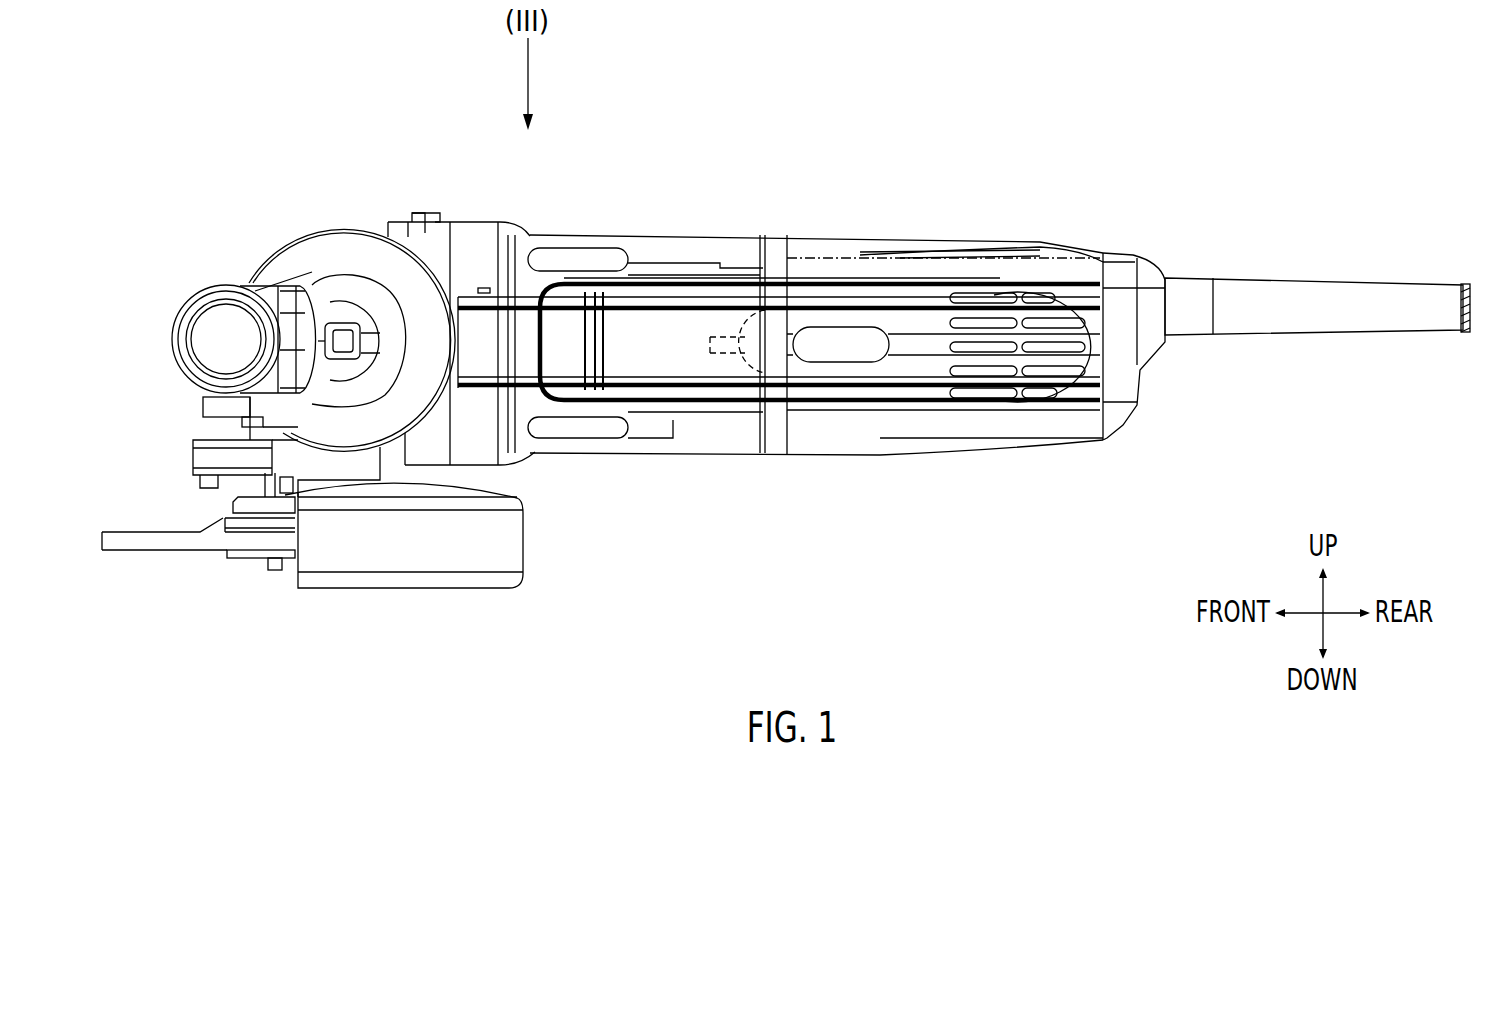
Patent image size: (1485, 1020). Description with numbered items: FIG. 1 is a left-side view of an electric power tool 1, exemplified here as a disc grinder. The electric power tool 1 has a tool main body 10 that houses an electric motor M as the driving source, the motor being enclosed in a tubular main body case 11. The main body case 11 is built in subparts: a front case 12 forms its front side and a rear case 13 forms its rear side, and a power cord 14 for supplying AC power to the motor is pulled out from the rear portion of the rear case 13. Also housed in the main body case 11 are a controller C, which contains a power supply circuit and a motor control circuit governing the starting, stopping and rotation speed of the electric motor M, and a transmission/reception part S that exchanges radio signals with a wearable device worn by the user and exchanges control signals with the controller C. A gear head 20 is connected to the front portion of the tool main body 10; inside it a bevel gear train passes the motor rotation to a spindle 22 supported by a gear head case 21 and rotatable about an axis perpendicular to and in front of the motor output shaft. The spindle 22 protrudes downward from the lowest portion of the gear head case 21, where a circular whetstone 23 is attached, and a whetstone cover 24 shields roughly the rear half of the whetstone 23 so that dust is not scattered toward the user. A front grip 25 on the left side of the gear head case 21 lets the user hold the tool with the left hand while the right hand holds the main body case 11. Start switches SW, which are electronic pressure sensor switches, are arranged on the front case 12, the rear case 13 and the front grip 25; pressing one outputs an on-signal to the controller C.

The electric power tool 1 is at (786, 360).
The tool main body 10 is at (964, 324).
The main body case 11 is at (928, 405).
The front case 12 is at (780, 300).
The rear case 13 is at (1012, 293).
The power cord 14 is at (1317, 267).
The gear head 20 is at (392, 326).
The gear head case 21 is at (207, 445).
The spindle 22 is at (260, 576).
The whetstone 23 is at (164, 585).
The whetstone cover 24 is at (404, 571).
The front grip 25 is at (266, 306).
The electric motor M is at (782, 242).
The controller C is at (950, 198).
The transmission/reception part S is at (970, 199).
The start switch SW is at (708, 342).